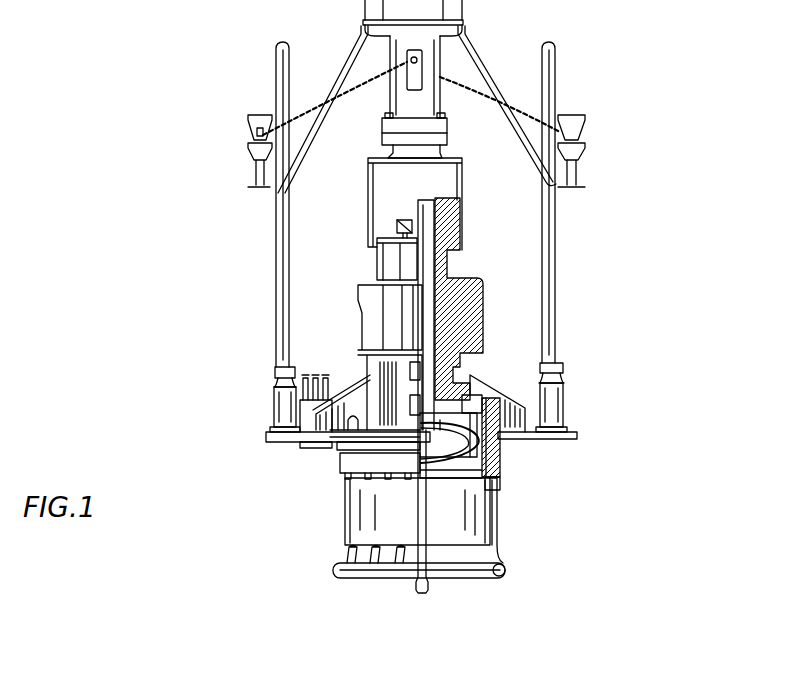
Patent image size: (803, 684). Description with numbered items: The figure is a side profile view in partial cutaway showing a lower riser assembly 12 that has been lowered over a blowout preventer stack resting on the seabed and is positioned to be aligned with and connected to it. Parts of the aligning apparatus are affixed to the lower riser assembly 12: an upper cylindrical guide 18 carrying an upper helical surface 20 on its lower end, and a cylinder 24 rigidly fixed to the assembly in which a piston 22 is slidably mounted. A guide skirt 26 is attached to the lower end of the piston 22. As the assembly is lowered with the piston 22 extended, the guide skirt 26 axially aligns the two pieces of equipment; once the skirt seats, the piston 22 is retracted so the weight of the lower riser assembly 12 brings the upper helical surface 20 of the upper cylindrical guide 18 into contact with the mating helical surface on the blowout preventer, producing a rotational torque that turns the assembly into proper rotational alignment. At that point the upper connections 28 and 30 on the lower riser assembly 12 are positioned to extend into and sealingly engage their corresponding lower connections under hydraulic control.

The lower riser assembly 12 is at (618, 194).
The upper cylindrical guide 18 is at (478, 392).
The upper helical surface 20 is at (494, 489).
The piston 22 is at (497, 503).
The cylinder 24 is at (512, 437).
The guide skirt 26 is at (510, 560).
The upper connection 28 is at (273, 408).
The upper connection 30 is at (565, 413).